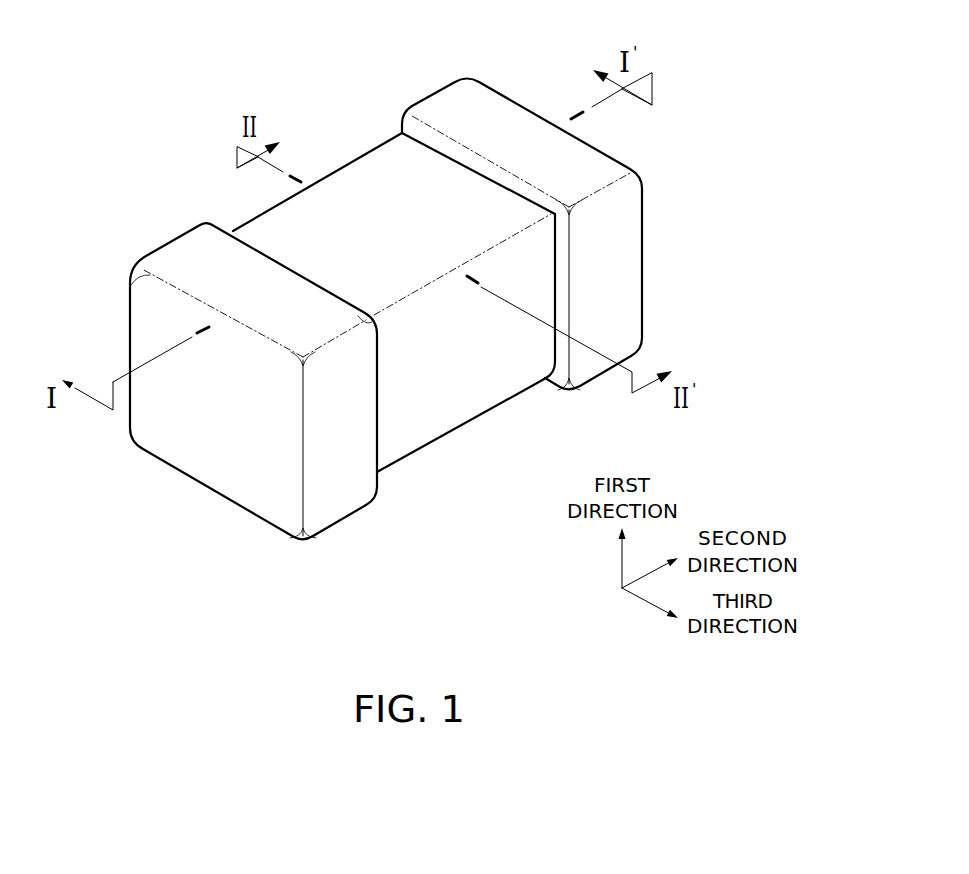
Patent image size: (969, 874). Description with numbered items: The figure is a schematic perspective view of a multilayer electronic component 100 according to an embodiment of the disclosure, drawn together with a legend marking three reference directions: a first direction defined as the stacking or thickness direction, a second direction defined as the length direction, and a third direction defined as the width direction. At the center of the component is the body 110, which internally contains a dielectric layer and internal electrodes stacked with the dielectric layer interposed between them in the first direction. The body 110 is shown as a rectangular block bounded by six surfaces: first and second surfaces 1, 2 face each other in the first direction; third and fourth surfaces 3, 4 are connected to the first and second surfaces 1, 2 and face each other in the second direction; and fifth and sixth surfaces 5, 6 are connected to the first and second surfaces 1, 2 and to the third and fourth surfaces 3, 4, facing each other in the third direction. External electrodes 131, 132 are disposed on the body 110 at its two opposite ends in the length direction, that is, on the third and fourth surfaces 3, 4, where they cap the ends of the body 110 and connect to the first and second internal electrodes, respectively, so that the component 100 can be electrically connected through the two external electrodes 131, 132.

The multilayer electronic component 100 is at (168, 41).
The body 110 is at (265, 242).
The external electrode 131 is at (188, 255).
The external electrode 132 is at (442, 107).
The first surface 1 is at (427, 393).
The second surface 2 is at (402, 190).
The third surface 3 is at (223, 437).
The fourth surface 4 is at (590, 248).
The fifth surface 5 is at (483, 365).
The sixth surface 6 is at (348, 212).